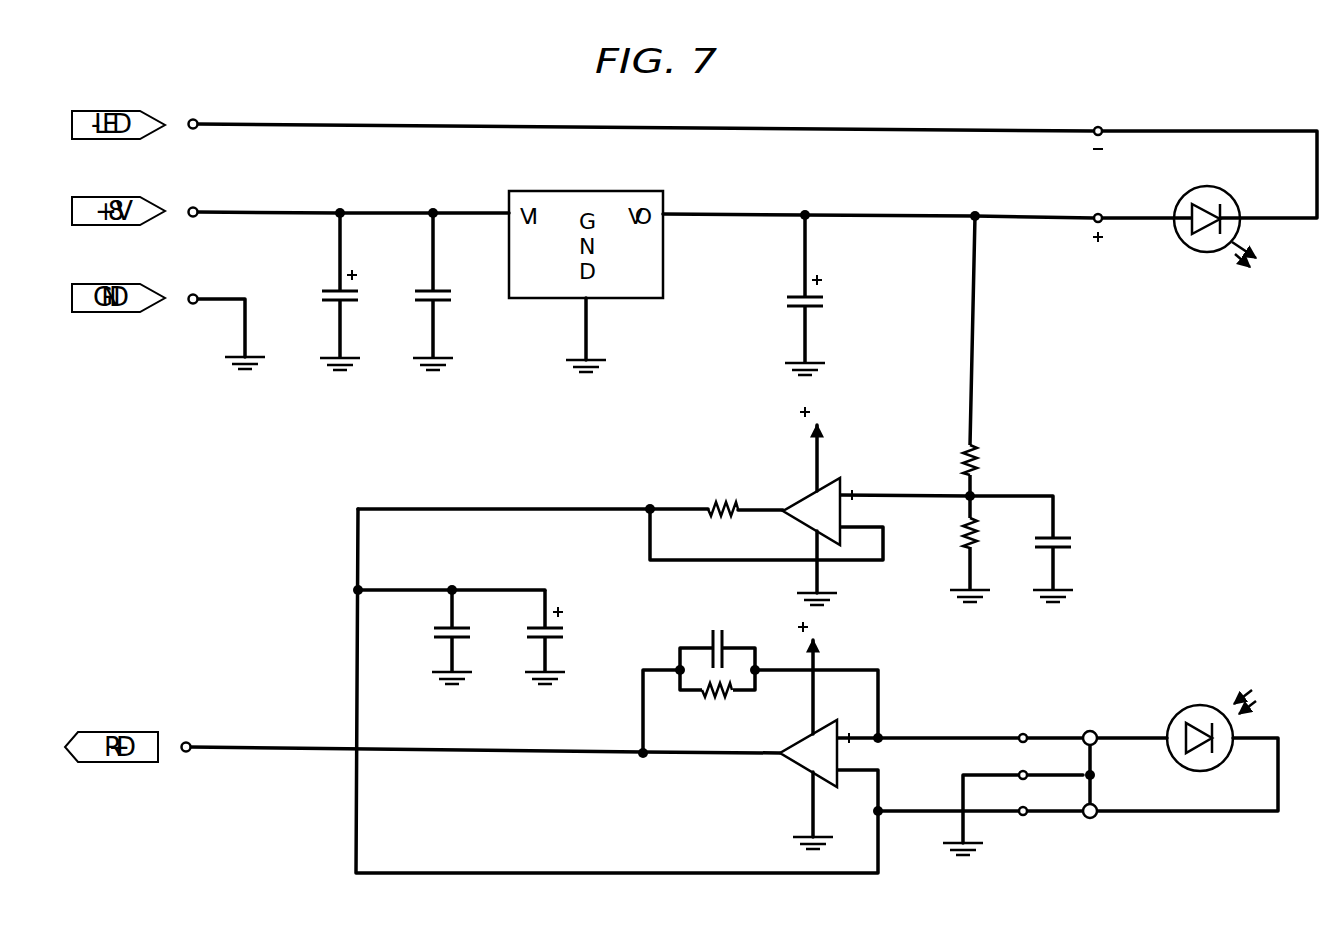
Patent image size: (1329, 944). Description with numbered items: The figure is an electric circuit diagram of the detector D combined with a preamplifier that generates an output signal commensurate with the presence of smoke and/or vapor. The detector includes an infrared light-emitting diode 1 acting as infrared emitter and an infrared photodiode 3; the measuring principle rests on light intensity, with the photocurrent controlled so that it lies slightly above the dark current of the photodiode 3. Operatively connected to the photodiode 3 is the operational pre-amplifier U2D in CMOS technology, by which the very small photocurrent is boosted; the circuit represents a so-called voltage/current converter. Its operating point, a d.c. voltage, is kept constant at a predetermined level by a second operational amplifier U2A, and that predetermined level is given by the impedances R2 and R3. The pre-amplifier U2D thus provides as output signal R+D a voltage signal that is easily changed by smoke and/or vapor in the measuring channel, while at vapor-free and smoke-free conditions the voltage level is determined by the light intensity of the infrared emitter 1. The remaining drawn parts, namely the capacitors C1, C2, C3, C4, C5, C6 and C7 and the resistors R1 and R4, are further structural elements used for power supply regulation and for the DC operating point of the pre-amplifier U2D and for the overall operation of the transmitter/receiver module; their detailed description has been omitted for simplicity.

The infrared light-emitting diode 1 is at (1210, 306).
The infrared photodiode 3 is at (1192, 642).
The capacitor C1 is at (355, 289).
The capacitor C2 is at (448, 289).
The capacitor C3 is at (820, 292).
The capacitor C4 is at (1036, 549).
The capacitor C5 is at (467, 634).
The capacitor C6 is at (561, 637).
The capacitor C7 is at (717, 642).
The resistor R1 is at (723, 494).
The impedance R2 is at (986, 356).
The impedance R3 is at (980, 549).
The resistor R4 is at (717, 696).
The second operational amplifier U2A is at (826, 506).
The operational pre-amplifier U2D is at (813, 735).